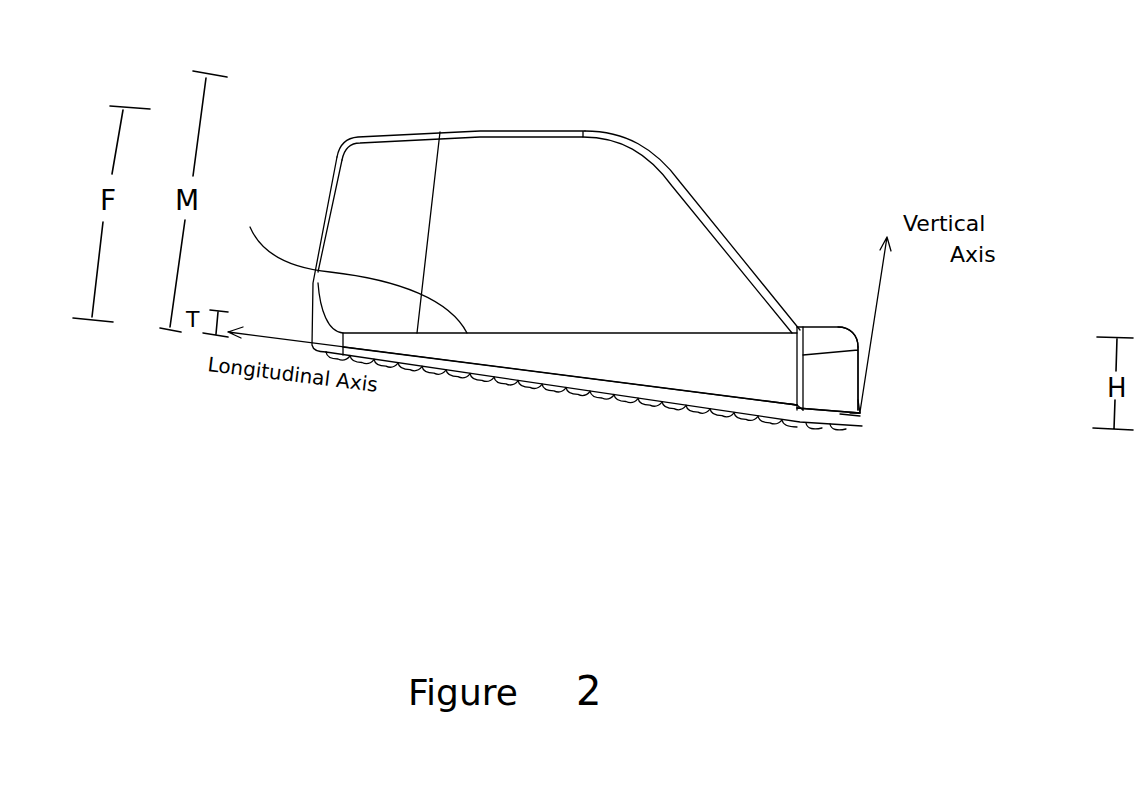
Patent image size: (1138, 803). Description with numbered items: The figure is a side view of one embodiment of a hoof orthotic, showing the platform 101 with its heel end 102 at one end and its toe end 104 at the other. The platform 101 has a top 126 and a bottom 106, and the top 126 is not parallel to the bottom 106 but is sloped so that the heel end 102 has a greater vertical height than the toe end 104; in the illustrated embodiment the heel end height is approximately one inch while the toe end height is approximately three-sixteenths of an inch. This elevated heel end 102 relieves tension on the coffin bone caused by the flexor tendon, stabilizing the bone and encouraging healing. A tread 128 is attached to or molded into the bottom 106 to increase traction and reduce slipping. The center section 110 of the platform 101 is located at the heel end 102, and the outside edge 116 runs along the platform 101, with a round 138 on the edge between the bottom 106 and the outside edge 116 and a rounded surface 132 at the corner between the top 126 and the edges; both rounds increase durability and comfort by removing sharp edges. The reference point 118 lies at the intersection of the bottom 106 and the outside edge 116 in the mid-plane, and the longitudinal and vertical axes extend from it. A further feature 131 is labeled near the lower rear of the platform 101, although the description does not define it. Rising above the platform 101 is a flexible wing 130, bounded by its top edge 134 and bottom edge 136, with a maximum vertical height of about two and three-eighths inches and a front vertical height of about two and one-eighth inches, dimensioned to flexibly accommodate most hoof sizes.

The top edge 134 is at (500, 131).
The wing 130 is at (630, 178).
The rounded surface 132 is at (863, 350).
The top 126 is at (810, 327).
The center section 110 is at (862, 347).
The heel end 102 is at (926, 320).
The platform 101 is at (863, 416).
The reference point 118 is at (863, 416).
The round 138 is at (860, 415).
The bottom of partition 131 is at (802, 414).
The bottom 106 is at (790, 405).
The tread 128 is at (587, 399).
The outside edge 116 is at (442, 348).
The bottom edge 136 is at (339, 261).
The toe end 104 is at (290, 322).